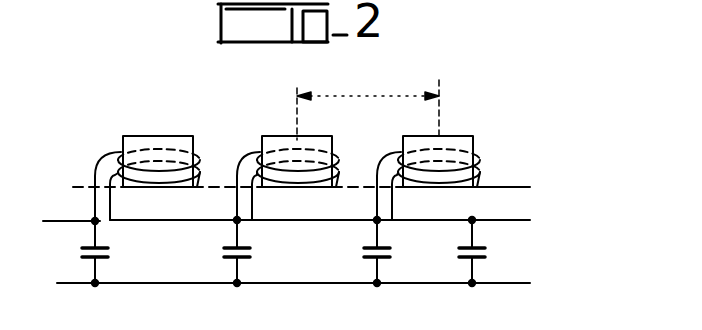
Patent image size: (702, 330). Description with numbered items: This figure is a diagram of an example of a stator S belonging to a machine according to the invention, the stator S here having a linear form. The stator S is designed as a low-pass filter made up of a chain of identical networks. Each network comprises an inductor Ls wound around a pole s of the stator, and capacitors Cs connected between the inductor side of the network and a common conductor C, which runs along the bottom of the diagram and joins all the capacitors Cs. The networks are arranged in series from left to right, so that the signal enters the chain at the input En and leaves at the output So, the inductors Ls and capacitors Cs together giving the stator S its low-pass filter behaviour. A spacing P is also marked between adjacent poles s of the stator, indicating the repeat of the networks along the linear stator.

The inductor Ls is at (378, 159).
The pole s is at (470, 134).
The stator S is at (535, 156).
The pitch P is at (368, 102).
The input En is at (63, 207).
The output So is at (337, 213).
The capacitor Cs is at (108, 249).
The common conductor C is at (498, 283).